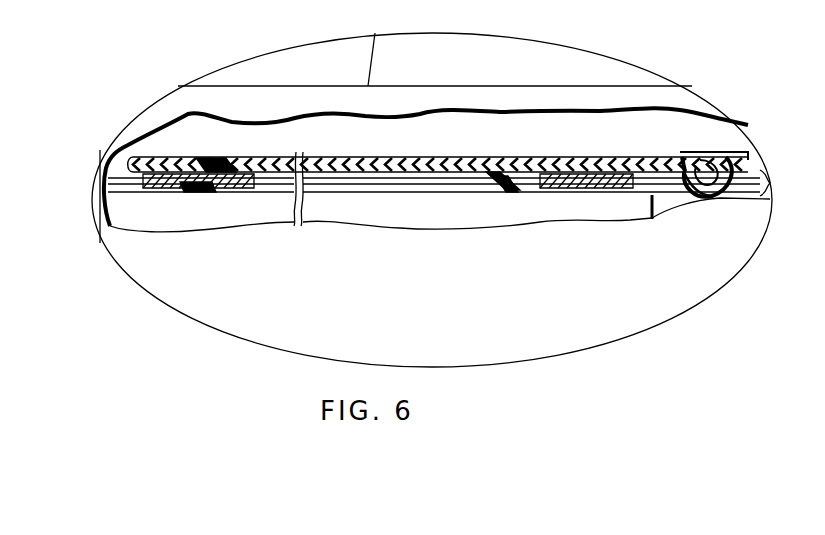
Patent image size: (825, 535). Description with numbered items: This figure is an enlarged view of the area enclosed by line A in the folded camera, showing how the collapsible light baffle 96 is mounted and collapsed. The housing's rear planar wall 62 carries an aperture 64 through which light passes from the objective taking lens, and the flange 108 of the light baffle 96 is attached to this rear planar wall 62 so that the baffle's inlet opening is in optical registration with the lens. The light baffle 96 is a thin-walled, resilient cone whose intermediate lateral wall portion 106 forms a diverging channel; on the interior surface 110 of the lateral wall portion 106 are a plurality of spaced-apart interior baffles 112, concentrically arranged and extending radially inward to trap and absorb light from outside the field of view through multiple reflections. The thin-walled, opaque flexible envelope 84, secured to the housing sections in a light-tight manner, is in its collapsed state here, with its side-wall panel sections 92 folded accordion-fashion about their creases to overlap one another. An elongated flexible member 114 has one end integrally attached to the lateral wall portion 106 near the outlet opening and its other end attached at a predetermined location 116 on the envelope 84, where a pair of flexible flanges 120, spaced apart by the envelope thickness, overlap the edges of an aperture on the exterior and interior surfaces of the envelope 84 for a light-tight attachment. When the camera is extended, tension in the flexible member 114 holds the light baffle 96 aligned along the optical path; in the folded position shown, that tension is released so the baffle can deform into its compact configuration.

The rear planar wall 62 is at (162, 187).
The aperture 64 is at (208, 170).
The flexible envelope 84 is at (575, 150).
The panel sections 92 is at (771, 183).
The light baffle 96 is at (432, 173).
The lateral wall portion 106 is at (394, 174).
The flange 108 is at (188, 192).
The interior surface 110 is at (401, 178).
The interior baffles 112 is at (441, 176).
The elongated flexible member 114 is at (690, 195).
The predetermined location 116 is at (750, 157).
The flexible flanges 120 is at (722, 162).
The line A is at (664, 74).